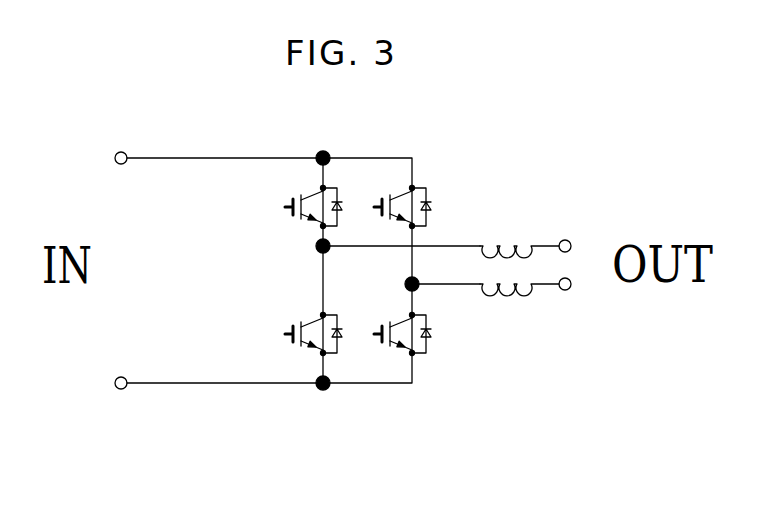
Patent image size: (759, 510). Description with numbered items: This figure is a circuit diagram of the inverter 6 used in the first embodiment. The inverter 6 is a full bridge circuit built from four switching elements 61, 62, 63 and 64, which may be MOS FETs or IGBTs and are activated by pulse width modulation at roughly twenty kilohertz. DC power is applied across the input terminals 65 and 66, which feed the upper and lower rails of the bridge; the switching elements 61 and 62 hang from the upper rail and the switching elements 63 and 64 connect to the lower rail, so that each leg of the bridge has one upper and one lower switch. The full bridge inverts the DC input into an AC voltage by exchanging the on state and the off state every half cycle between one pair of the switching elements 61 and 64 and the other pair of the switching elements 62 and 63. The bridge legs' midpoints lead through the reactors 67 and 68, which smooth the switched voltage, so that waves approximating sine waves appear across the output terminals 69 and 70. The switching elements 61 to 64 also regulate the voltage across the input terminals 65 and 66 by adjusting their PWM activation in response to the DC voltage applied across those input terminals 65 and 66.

The inverter 6 is at (508, 149).
The switching element 61 is at (295, 201).
The switching element 62 is at (422, 191).
The switching element 63 is at (302, 325).
The switching element 64 is at (427, 351).
The input terminal 65 is at (134, 138).
The input terminal 66 is at (134, 362).
The reactor 67 is at (519, 229).
The reactor 68 is at (519, 311).
The output terminal 69 is at (574, 228).
The output terminal 70 is at (574, 306).